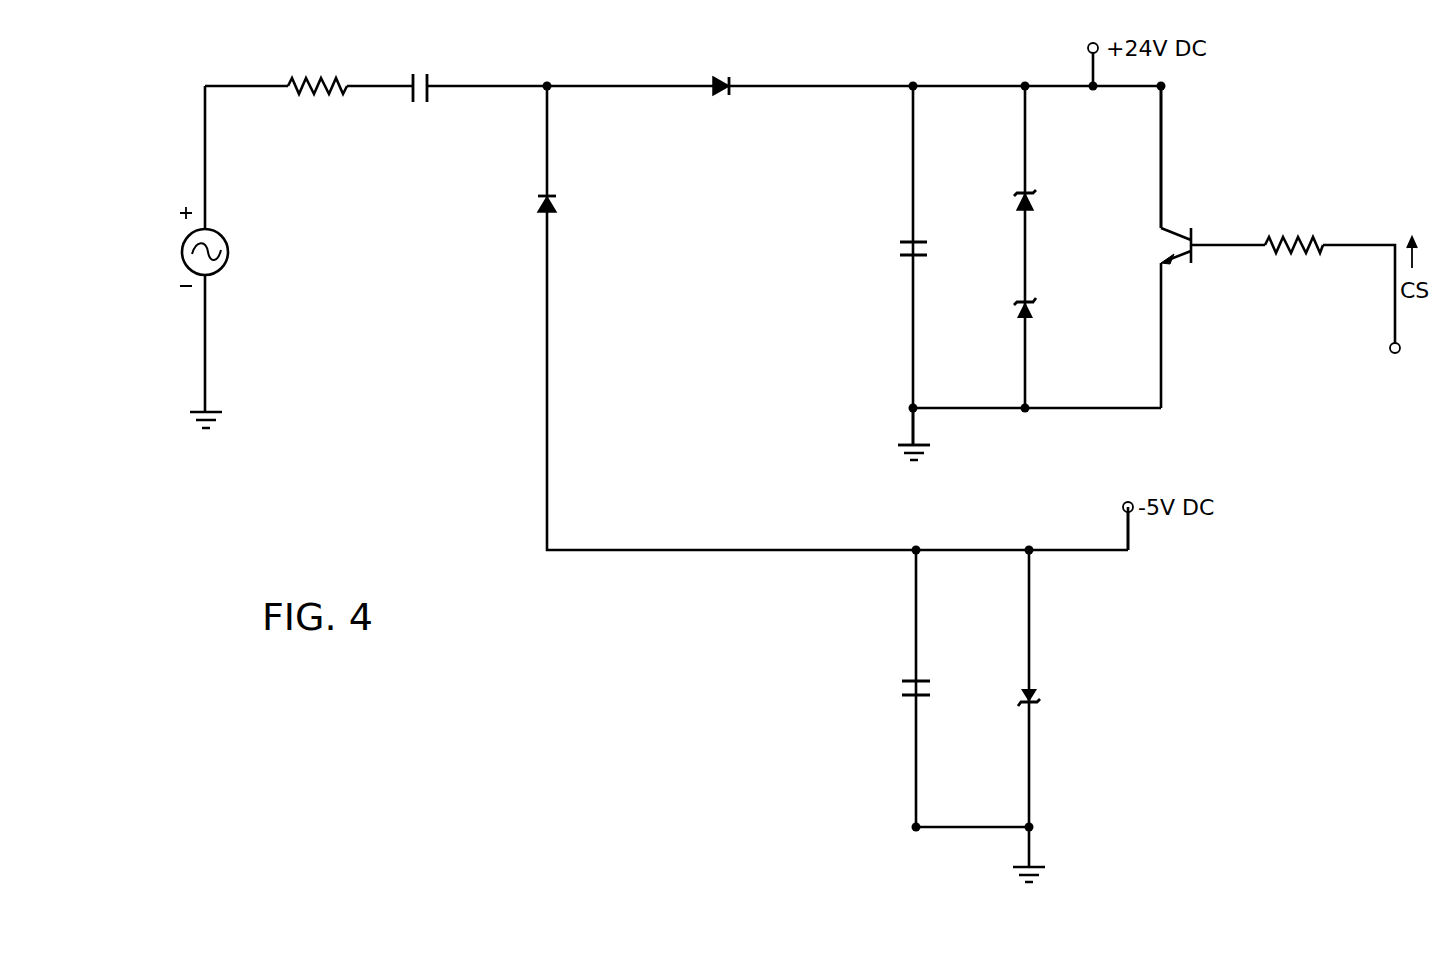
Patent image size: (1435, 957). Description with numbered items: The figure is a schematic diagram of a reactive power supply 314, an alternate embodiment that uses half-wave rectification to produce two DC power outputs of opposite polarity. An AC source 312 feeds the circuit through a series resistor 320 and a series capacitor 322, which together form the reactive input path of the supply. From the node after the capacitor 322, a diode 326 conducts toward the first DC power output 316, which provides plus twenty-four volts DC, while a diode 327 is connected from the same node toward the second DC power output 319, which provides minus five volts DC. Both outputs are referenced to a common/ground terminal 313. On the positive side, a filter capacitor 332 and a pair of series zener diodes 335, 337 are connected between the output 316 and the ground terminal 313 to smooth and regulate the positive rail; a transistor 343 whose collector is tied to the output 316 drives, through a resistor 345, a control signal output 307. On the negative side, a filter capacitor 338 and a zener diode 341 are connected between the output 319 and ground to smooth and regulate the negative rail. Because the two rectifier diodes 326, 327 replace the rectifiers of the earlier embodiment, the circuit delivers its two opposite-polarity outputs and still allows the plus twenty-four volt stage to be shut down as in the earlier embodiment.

The current signal output 307 is at (1342, 215).
The AC signal source 312 is at (190, 232).
The common/ground terminal 313 is at (910, 465).
The reactive power supply 314 is at (502, 617).
The first DC power output 316 is at (1161, 86).
The second DC power output 319 is at (1128, 550).
The 22 ohm resistor 320 is at (318, 95).
The 1 microfarad capacitor 322 is at (429, 98).
The diode 326 is at (716, 98).
The diode 327 is at (556, 200).
The 100 microfarad capacitor 332 is at (910, 257).
The zener diode 335 is at (1033, 207).
The zener diode 337 is at (1033, 312).
The 220 microfarad capacitor 338 is at (922, 680).
The zener diode 341 is at (1037, 696).
The transistor 343 is at (1193, 255).
The 4.7K ohm resistor 345 is at (1296, 254).